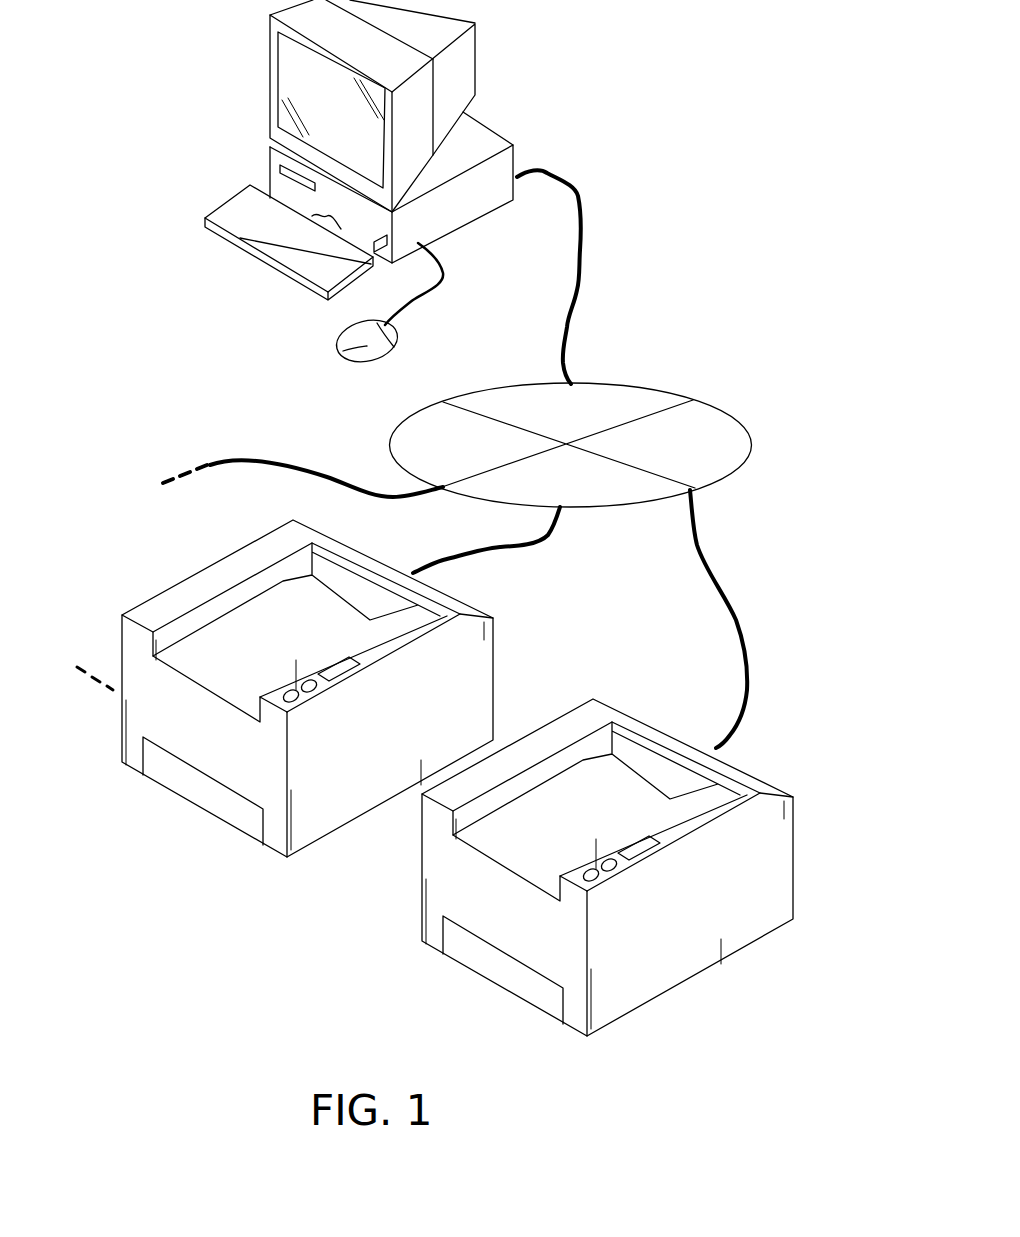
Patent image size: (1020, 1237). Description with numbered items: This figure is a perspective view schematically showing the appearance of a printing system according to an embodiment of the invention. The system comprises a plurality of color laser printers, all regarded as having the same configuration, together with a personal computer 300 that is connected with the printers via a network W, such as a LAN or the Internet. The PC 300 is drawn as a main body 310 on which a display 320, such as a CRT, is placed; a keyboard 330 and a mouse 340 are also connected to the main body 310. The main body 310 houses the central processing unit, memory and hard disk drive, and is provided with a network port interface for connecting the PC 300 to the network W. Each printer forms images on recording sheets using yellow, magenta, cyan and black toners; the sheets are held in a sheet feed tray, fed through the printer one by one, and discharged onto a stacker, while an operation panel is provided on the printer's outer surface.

The personal computer 300 is at (379, 192).
The main body 310 is at (460, 213).
The display 320 is at (270, 56).
The keyboard 330 is at (268, 265).
The mouse 340 is at (340, 347).
The network W is at (660, 388).